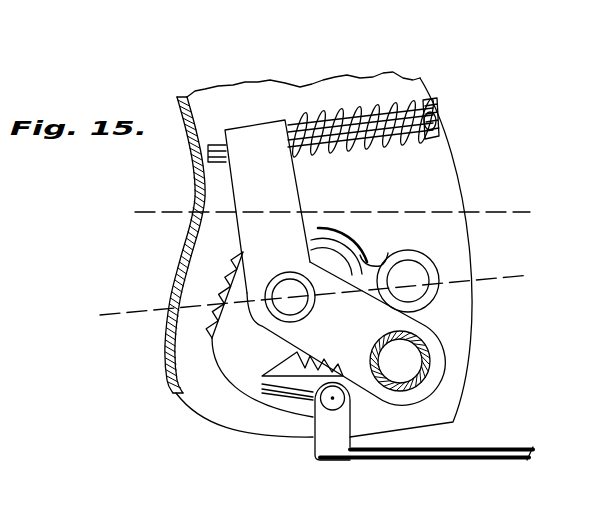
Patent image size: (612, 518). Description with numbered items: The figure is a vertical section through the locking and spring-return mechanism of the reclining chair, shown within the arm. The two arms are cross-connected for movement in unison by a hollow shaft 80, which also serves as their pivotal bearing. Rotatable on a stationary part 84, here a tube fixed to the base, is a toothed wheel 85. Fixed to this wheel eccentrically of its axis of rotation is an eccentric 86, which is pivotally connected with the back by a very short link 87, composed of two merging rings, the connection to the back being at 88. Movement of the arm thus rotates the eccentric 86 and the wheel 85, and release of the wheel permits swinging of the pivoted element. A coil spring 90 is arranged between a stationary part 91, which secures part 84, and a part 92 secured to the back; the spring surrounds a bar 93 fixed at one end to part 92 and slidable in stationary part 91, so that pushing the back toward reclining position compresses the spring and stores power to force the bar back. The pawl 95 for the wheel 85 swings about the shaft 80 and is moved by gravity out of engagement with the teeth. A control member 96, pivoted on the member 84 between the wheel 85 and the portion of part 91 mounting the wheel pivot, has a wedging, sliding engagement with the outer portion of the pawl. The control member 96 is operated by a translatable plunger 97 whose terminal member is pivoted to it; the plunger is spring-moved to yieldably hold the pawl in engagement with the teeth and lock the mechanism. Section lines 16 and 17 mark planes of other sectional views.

The section line 16- 16 is at (515, 237).
The section line 17- 17 is at (122, 350).
The hollow shaft 80 is at (428, 358).
The stationary part 84 is at (270, 303).
The toothed wheel 85 is at (218, 276).
The eccentric 86 is at (340, 246).
The link 87 is at (358, 270).
The pivotal connection to back 88 is at (403, 277).
The coil spring 90 is at (347, 113).
The stationary part 91 is at (257, 152).
The part secured to the back 92 is at (430, 96).
The bar 93 is at (320, 124).
The pawl 95 is at (313, 383).
The control member 96 is at (255, 370).
The plunger 97 is at (502, 462).